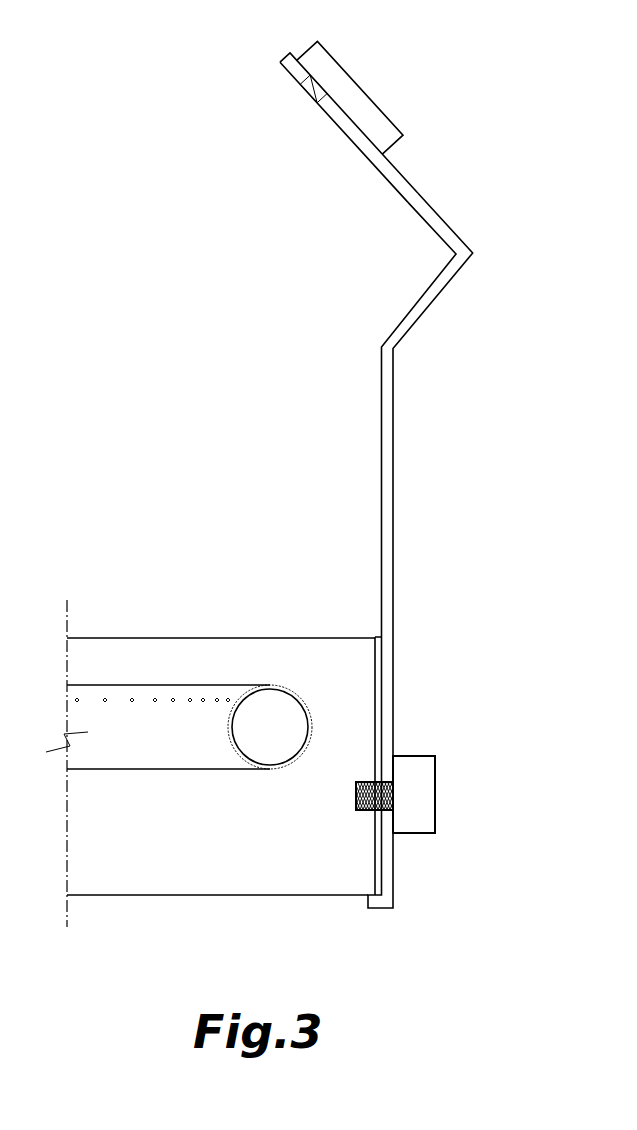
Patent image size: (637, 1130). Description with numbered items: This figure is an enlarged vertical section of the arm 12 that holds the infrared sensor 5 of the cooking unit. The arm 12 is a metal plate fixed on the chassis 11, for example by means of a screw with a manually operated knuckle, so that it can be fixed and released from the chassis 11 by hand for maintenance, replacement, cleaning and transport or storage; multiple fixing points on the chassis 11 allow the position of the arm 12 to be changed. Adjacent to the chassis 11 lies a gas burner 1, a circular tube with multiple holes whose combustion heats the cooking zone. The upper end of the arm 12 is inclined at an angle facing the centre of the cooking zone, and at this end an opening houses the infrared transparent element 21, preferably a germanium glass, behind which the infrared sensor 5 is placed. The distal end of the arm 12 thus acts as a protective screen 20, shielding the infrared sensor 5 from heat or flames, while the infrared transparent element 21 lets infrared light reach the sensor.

The gas burner 1 is at (238, 757).
The infrared sensor 5 is at (358, 87).
The chassis 11 is at (375, 862).
The arm 12 is at (393, 476).
The protective screen 20 is at (358, 147).
The infrared transparent element 21 is at (314, 97).